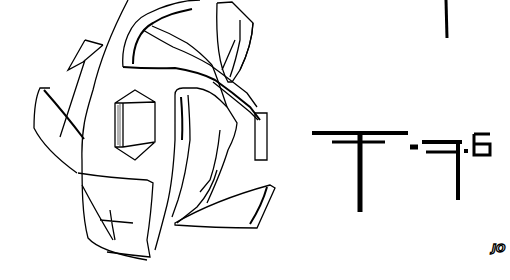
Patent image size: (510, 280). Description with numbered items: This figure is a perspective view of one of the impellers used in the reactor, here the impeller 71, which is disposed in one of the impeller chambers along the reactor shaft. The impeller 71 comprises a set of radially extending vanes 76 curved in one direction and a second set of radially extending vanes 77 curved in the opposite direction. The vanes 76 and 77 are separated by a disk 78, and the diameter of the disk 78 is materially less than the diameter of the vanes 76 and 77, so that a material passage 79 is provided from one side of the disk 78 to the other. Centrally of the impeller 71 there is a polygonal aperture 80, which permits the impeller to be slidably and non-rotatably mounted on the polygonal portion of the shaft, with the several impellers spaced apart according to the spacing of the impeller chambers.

The impeller 71 is at (236, 159).
The radially extending vanes 76 is at (255, 45).
The second set of radially extending vanes 77 is at (257, 98).
The disk 78 is at (191, 27).
The material passage 79 is at (216, 33).
The polygonal aperture 80 is at (147, 93).